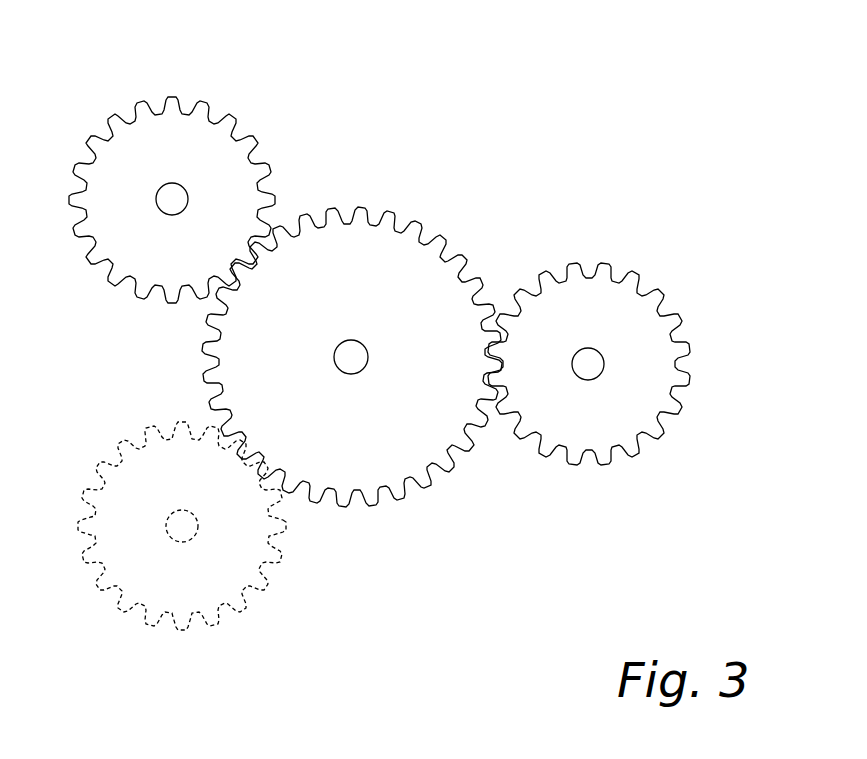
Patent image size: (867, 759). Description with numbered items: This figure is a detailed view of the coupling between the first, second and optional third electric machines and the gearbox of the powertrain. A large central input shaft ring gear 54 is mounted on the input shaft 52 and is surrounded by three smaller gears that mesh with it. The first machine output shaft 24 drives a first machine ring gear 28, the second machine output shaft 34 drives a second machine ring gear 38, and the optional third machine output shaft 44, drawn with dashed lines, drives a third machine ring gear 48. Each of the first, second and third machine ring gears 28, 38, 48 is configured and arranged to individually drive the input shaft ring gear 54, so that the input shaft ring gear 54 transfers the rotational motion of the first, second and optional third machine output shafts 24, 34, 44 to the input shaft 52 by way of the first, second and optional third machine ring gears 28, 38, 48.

The first machine output shaft 24 is at (160, 184).
The first machine ring gear 28 is at (205, 101).
The second machine output shaft 34 is at (589, 348).
The second machine ring gear 38 is at (661, 421).
The third machine output shaft 44 is at (170, 512).
The third machine ring gear 48 is at (247, 607).
The input shaft 52 is at (354, 374).
The input shaft ring gear 54 is at (398, 240).